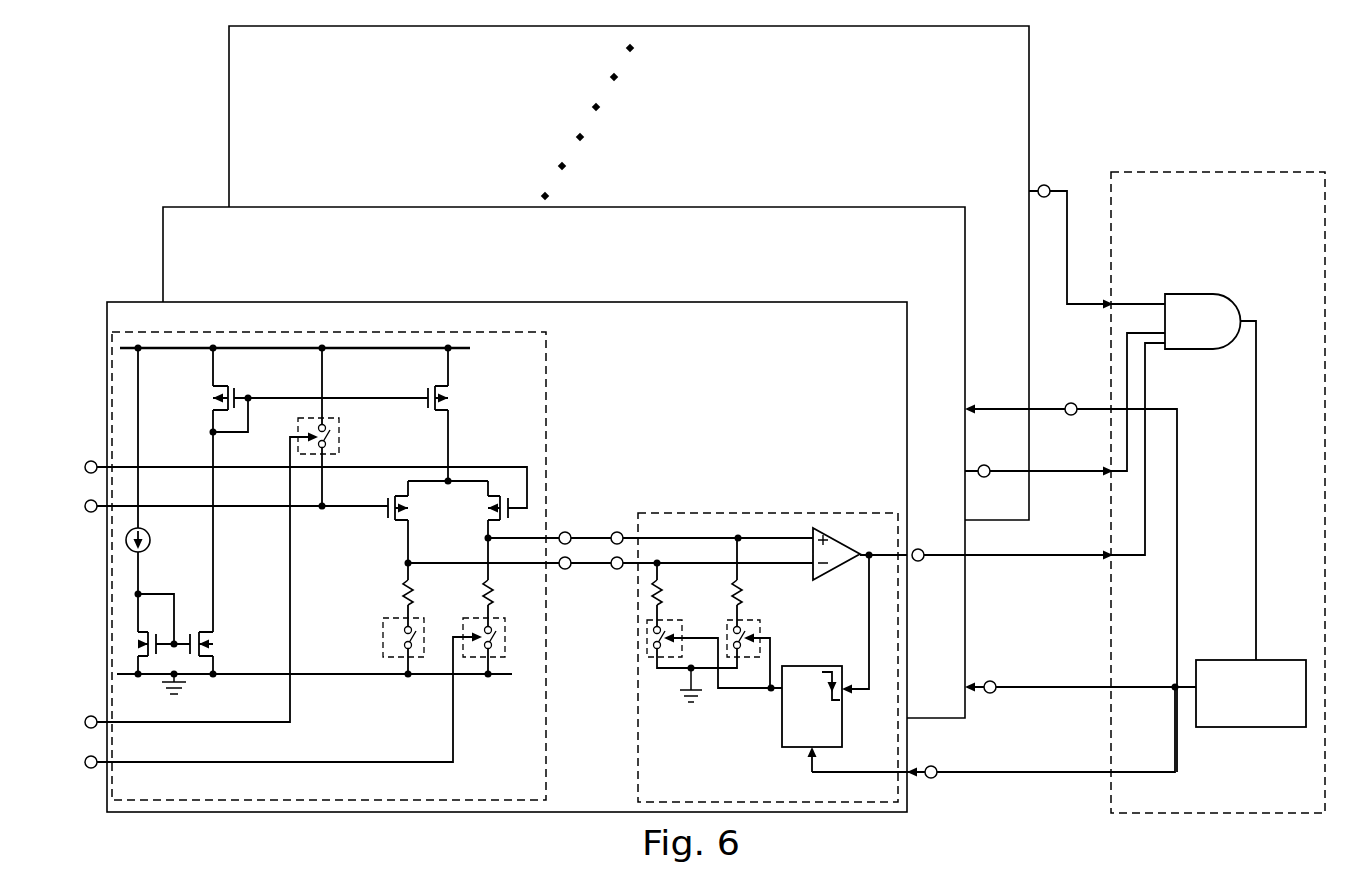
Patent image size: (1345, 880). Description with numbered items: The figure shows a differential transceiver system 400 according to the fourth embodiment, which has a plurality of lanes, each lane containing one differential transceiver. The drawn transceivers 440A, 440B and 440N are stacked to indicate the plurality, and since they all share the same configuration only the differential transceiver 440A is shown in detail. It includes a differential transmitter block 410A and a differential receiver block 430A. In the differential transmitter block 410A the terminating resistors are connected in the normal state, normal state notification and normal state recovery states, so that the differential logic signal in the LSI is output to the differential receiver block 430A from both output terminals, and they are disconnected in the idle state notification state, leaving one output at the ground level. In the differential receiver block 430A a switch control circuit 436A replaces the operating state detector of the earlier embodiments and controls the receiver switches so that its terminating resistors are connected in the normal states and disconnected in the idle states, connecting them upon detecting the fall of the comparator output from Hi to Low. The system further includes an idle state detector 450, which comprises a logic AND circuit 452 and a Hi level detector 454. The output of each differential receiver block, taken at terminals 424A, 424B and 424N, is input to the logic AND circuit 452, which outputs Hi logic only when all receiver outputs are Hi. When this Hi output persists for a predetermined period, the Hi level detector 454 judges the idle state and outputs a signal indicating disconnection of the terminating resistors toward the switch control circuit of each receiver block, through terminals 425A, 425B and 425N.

The differential transceiver system 400 is at (1162, 94).
The differential transceiver 440N is at (760, 26).
The differential transceiver 440B is at (638, 207).
The differential transceiver 440A is at (548, 302).
The differential transmitter block 410A is at (546, 405).
The differential receiver block 430A is at (795, 513).
The switch control circuit 436A is at (795, 666).
The output terminal 424N is at (1046, 184).
The output terminal 424B is at (987, 464).
The output terminal 424A is at (919, 548).
The control input terminal 425N is at (1072, 402).
The control input terminal 425B is at (993, 680).
The control input terminal 425A is at (933, 765).
The idle state detector 450 is at (1215, 172).
The logic AND circuit 452 is at (1200, 294).
The Hi level detector 454 is at (1208, 660).